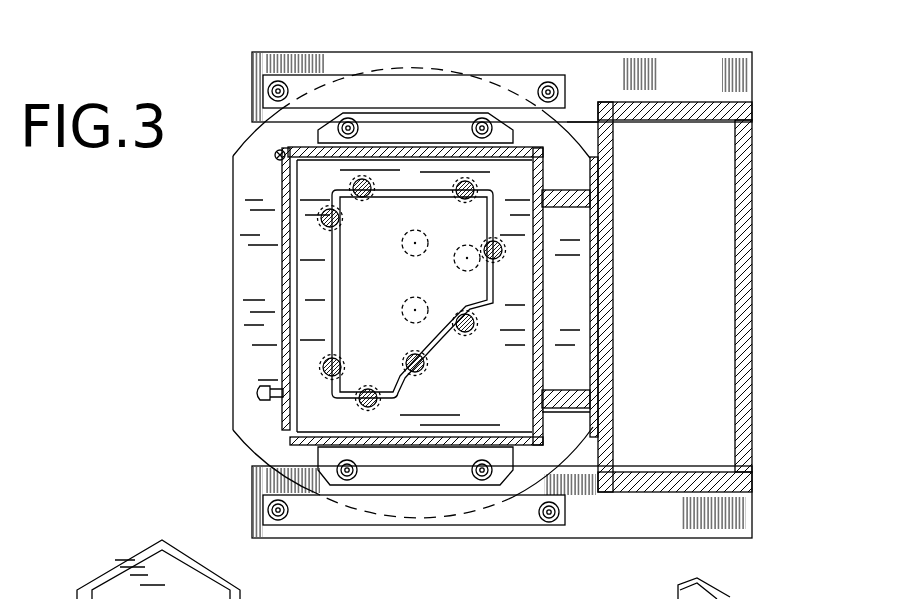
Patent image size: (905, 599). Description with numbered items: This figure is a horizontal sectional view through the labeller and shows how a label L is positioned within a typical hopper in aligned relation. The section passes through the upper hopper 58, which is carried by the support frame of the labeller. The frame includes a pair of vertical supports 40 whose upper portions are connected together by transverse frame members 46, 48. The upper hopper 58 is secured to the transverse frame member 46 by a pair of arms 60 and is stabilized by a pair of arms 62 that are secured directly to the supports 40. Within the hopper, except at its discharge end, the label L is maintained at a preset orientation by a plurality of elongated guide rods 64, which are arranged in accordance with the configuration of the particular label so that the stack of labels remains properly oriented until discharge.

The vertical supports 40 is at (672, 108).
The transverse frame member 46 is at (603, 310).
The transverse frame member 48 is at (743, 240).
The upper hopper 58 is at (233, 313).
The arms 60 is at (570, 198).
The arms 62 is at (608, 76).
The guide rods 64 is at (363, 180).
The label L is at (353, 280).